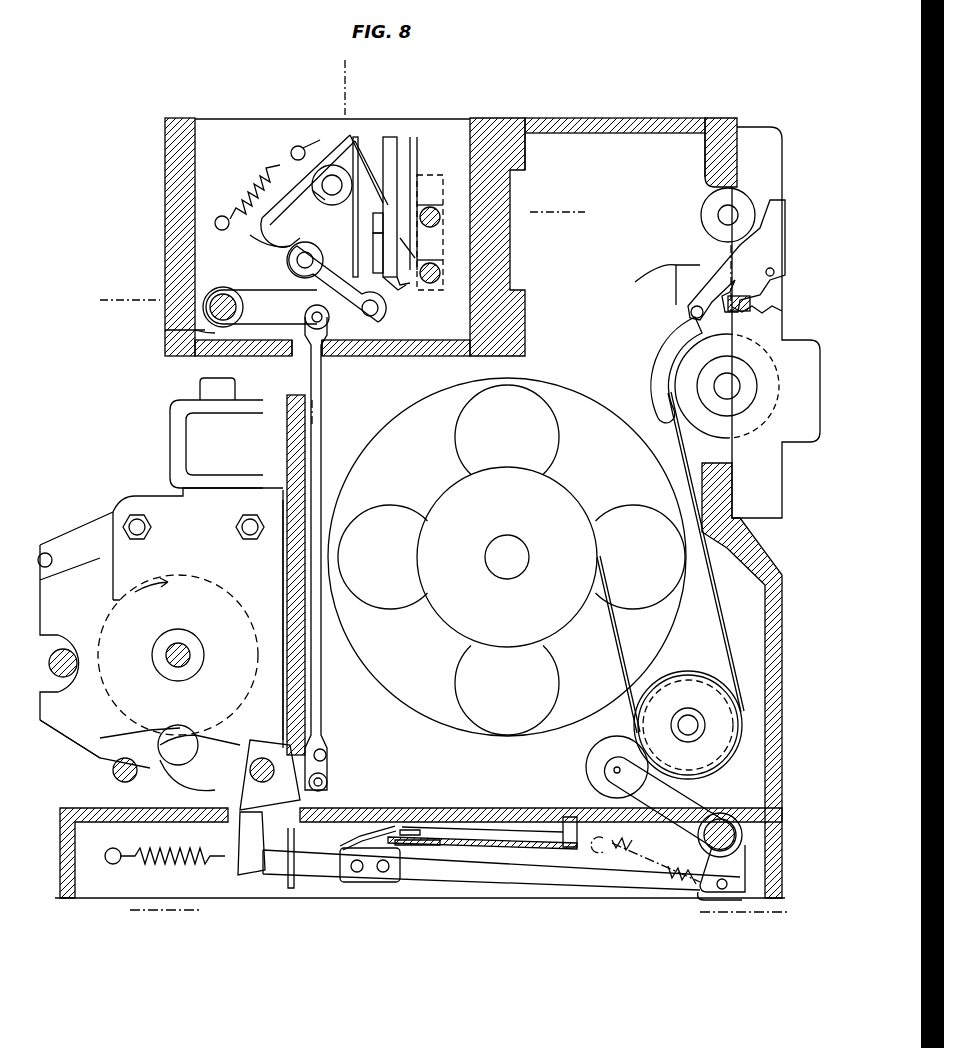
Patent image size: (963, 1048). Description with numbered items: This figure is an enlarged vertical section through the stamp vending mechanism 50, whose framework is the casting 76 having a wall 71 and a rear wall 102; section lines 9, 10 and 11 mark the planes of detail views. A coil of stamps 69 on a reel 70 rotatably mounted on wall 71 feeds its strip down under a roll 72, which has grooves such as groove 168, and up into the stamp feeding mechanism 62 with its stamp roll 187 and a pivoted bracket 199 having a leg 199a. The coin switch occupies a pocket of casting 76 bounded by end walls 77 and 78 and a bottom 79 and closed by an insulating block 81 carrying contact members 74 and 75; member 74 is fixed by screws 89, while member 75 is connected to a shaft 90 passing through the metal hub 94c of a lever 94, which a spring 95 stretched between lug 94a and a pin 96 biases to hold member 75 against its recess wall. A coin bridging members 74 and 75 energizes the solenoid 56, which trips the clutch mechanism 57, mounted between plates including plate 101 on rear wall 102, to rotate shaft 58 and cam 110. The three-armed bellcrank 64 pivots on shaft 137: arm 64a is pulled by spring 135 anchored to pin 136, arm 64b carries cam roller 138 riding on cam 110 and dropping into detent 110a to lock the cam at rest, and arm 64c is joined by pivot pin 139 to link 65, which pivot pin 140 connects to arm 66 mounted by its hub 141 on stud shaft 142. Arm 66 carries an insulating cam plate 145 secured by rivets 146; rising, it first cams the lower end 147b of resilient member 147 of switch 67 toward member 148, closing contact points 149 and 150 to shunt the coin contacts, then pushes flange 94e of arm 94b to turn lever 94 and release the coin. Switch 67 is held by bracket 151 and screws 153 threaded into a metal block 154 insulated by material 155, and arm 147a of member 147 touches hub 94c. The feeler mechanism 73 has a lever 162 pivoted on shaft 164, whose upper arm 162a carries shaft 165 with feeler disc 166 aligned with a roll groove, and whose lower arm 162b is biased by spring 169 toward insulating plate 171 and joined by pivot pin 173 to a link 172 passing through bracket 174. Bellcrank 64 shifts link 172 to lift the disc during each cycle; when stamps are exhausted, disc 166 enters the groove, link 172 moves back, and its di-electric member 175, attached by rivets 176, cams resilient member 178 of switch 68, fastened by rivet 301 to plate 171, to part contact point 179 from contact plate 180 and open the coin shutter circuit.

The section line 9- 9 is at (570, 198).
The section line 10- 10 is at (333, 73).
The section line 11- 11 is at (131, 918).
The vending mechanism 50 is at (568, 105).
The solenoid 56 is at (160, 412).
The clutch mechanism 57 is at (72, 518).
The shaft 58 is at (180, 650).
The stamp feeding mechanism 62 is at (640, 360).
The three-armed bellcrank 64 is at (226, 832).
The arm of bellcrank 64a is at (242, 870).
The arm of bellcrank 64b is at (190, 775).
The arm of bellcrank 64c is at (326, 756).
The link 65 is at (322, 433).
The arm 66 is at (258, 318).
The switch 67 is at (432, 148).
The switch 68 is at (472, 830).
The coil of stamps 69 is at (512, 472).
The reel 70 is at (608, 400).
The wall 71 is at (618, 142).
The roll 72 is at (690, 702).
The feeler mechanism 73 is at (580, 773).
The contact member 74 is at (436, 178).
The contact member 75 is at (336, 268).
The casting 76 is at (718, 113).
The end wall 77 is at (165, 152).
The end wall 78 is at (527, 243).
The bottom 79 is at (443, 348).
The block 81 is at (232, 128).
The screws 89 is at (440, 214).
The shaft 90 is at (334, 176).
The lever 94 is at (330, 135).
The lug 94a is at (292, 148).
The arm of lever 94b is at (270, 228).
The metal hub 94c is at (320, 188).
The flange portion 94e is at (272, 254).
The spring 95 is at (244, 200).
The pin 96 is at (220, 217).
The plate 101 is at (158, 512).
The rear wall 102 is at (287, 605).
The cam 110 is at (98, 742).
The detent 110a is at (236, 708).
The spring 135 is at (185, 864).
The pin 136 is at (108, 862).
The shaft 137 is at (260, 758).
The cam roller 138 is at (108, 774).
The pivot pin 139 is at (327, 784).
The pivot pin 140 is at (310, 322).
The hub 141 is at (210, 300).
The stud shaft 142 is at (205, 328).
The cam plate 145 is at (380, 314).
The rivets 146 is at (300, 265).
The switch member 147 is at (391, 134).
The arm 147a is at (360, 198).
The lower end 147b is at (405, 298).
The switch member 148 is at (414, 134).
The contact point 149 is at (400, 286).
The contact point 150 is at (444, 257).
The bracket 151 is at (444, 234).
The screws 153 is at (410, 262).
The metal block 154 is at (373, 236).
The insulating material 155 is at (373, 220).
The lever 162 is at (652, 824).
The arm 162a is at (682, 810).
The lower arm 162b is at (716, 896).
The shaft 164 is at (733, 838).
The shaft 165 is at (620, 766).
The feeler disc 166 is at (598, 756).
The groove 168 is at (694, 680).
The spring 169 is at (675, 885).
The flat plate 171 is at (420, 853).
The link 172 is at (585, 877).
The pivot pin 173 is at (728, 884).
The bracket 174 is at (291, 890).
The di-electric member 175 is at (362, 834).
The rivets 176 is at (380, 872).
The resilient member 178 is at (440, 828).
The contact point 179 is at (415, 828).
The contact plate 180 is at (405, 846).
The stamp roll 187 is at (692, 420).
The bracket 199 is at (752, 236).
The leg 199a is at (694, 318).
The rivet 301 is at (569, 816).